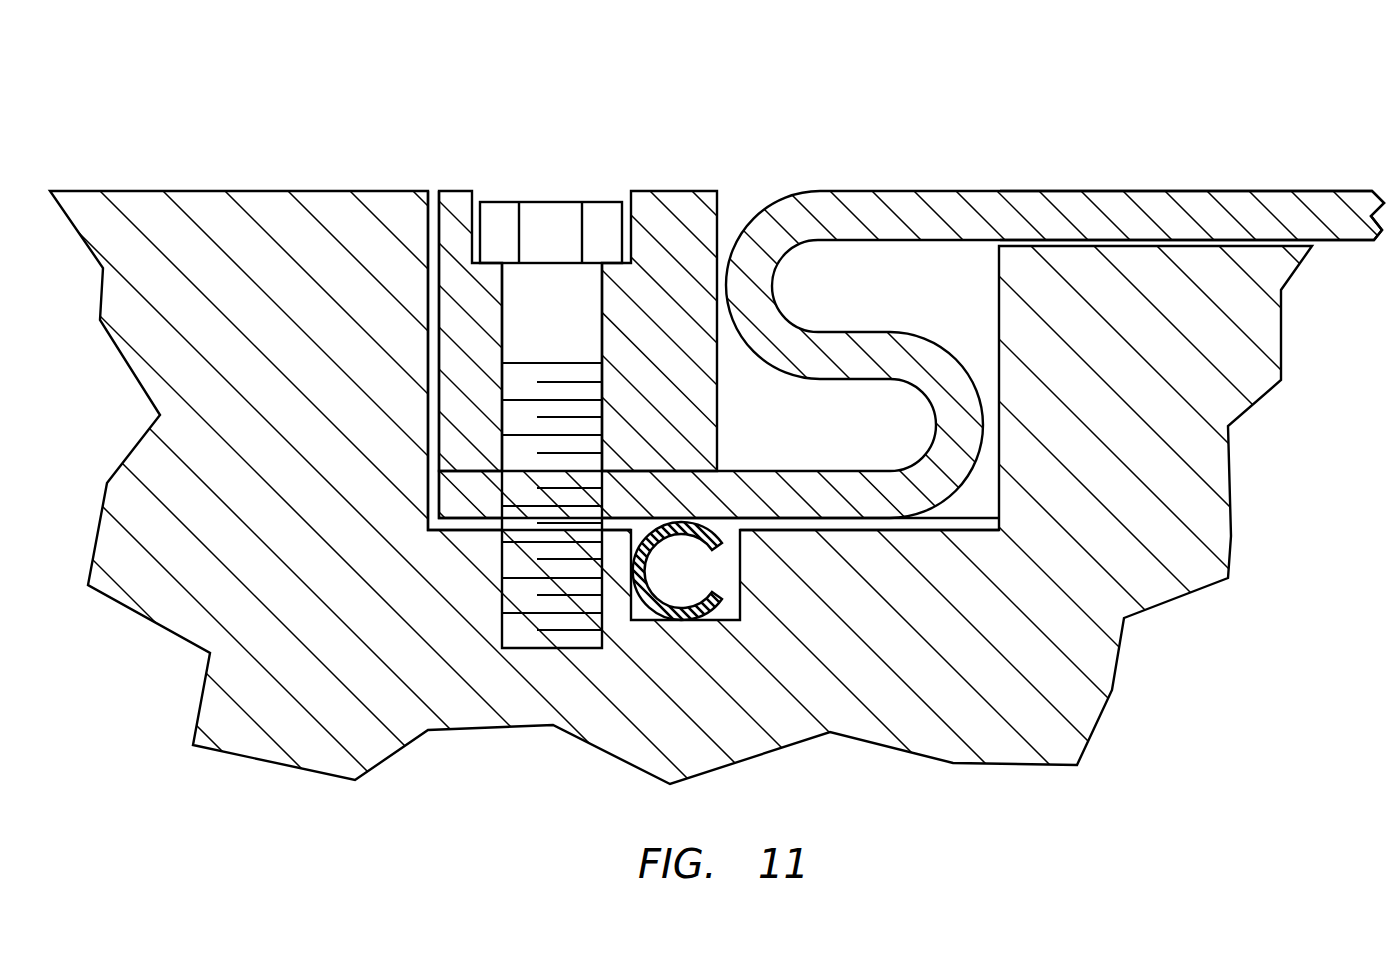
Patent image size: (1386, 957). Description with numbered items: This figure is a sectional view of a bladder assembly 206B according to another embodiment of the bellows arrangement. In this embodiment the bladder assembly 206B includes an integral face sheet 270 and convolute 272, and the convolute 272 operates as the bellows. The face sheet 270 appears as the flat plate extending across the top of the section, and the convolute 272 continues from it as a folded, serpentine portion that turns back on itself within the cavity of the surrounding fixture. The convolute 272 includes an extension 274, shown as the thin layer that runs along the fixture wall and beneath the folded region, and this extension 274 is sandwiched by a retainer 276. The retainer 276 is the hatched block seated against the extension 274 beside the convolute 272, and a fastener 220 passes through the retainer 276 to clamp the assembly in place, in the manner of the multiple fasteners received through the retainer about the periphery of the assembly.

The bladder assembly 206B is at (1090, 115).
The fastener 220 is at (562, 215).
The face sheet 270 is at (1166, 203).
The convolute 272 is at (777, 217).
The extension 274 is at (487, 503).
The retainer 276 is at (677, 358).